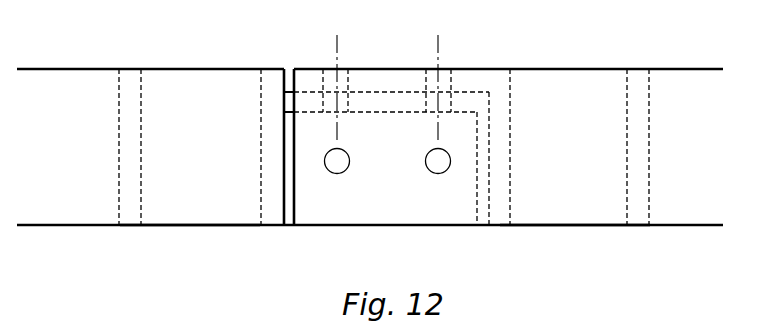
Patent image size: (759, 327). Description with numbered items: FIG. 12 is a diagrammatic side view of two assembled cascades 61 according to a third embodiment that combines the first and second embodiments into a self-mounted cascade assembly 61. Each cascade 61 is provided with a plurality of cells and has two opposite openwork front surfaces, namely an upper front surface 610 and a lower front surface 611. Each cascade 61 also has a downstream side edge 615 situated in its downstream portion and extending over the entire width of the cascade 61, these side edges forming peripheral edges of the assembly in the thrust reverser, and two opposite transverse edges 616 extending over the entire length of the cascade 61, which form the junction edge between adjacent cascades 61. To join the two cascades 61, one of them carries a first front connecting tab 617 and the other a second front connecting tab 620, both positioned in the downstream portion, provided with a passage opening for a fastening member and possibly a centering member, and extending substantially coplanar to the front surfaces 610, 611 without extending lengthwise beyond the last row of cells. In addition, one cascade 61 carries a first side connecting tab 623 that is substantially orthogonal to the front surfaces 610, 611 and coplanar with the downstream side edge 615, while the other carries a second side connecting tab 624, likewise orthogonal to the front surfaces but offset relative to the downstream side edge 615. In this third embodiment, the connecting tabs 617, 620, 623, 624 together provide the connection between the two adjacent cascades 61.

The upper front surface 610 is at (77, 68).
The downstream side edge 615 is at (182, 95).
The lower front surface 611 is at (167, 227).
The transverse edge 616 is at (297, 209).
The first front connecting tab 617 is at (375, 83).
The second front connecting tab 620 is at (408, 100).
The second side connecting tab 624 is at (386, 209).
The first side connecting tab 623 is at (481, 210).
The cascade 61 is at (95, 243).